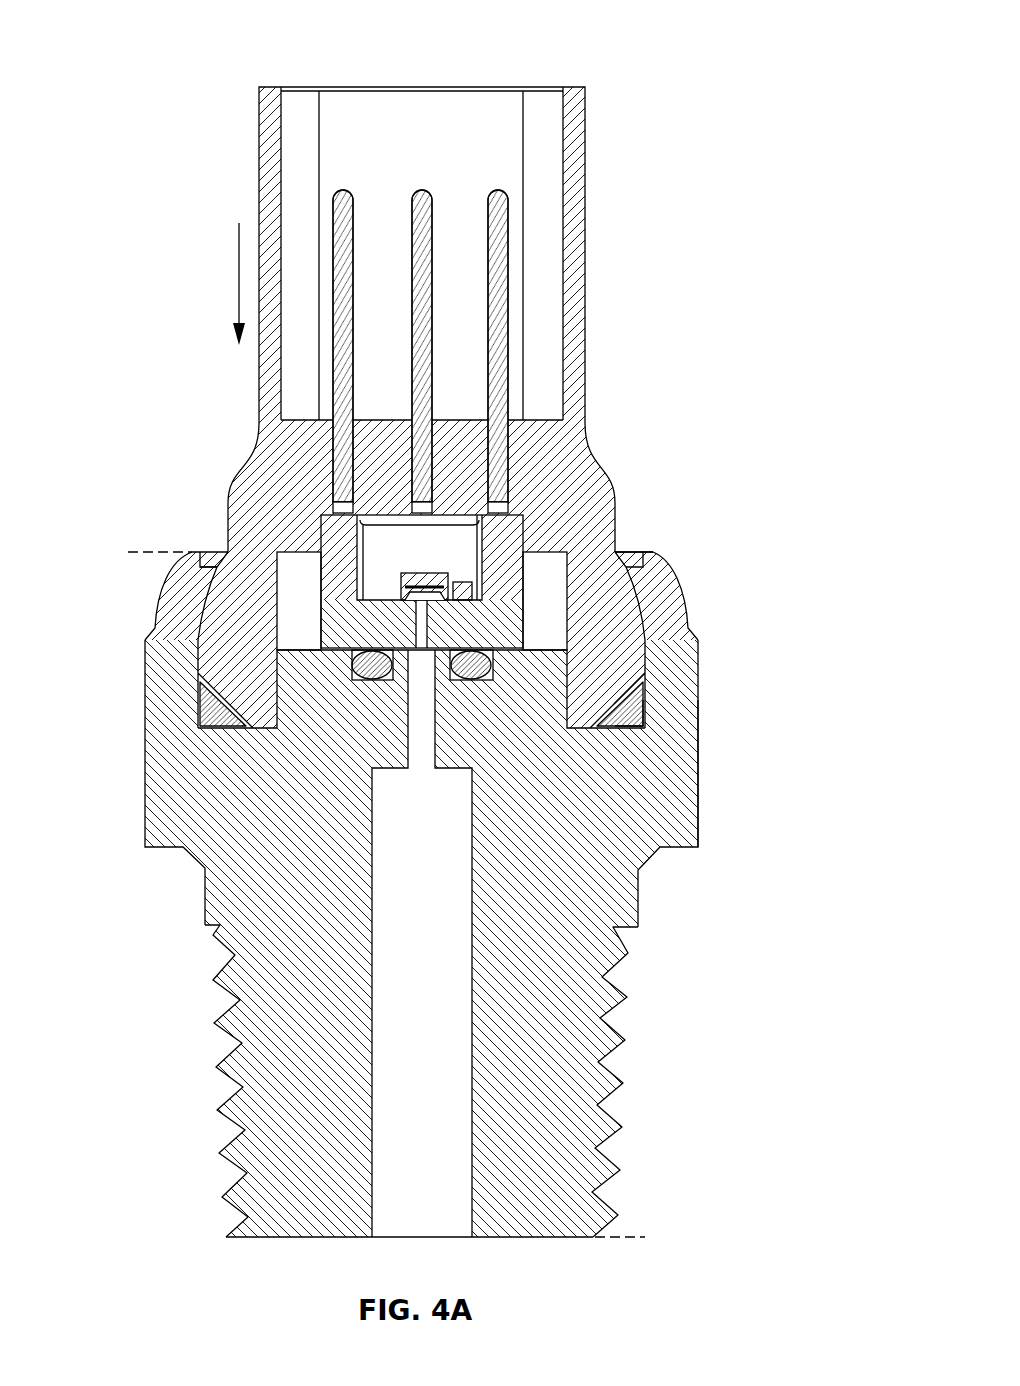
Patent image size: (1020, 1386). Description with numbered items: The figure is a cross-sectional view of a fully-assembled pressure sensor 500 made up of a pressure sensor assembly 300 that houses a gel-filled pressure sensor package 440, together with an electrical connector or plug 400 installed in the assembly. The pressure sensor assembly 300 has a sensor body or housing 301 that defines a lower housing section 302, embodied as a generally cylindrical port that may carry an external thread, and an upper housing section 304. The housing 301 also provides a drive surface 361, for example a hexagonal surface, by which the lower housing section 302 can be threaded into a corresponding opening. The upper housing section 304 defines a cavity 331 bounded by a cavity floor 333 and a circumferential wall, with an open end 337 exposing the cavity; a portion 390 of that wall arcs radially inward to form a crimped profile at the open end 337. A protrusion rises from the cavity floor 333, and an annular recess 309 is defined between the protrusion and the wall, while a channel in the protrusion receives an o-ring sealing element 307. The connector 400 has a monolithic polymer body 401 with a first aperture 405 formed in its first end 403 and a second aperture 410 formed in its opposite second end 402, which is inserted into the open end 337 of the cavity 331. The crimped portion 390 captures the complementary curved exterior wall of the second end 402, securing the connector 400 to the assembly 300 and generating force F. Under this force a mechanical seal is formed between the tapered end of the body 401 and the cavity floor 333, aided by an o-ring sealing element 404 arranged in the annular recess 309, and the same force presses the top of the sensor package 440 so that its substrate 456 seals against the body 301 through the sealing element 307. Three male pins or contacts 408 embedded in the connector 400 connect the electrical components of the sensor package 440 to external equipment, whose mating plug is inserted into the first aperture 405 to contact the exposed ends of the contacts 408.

The pressure sensor assembly 300 is at (448, 872).
The sensor body or housing 301 is at (663, 803).
The lower housing section 302 is at (640, 930).
The upper housing section 304 is at (135, 552).
The sealing element 307 is at (372, 668).
The annular recess 309 is at (613, 683).
The cavity 331 is at (663, 568).
The cavity floor 333 is at (627, 730).
The open end 337 is at (630, 529).
The drive surface 361 is at (698, 775).
The portion of wall 390 is at (200, 570).
The electrical connector or plug 400 is at (448, 621).
The body 401 is at (567, 448).
The second end 402 is at (605, 615).
The first end 403 is at (575, 168).
The sealing element 404 is at (633, 708).
The first aperture 405 is at (444, 156).
The male pins or contacts 408 is at (498, 310).
The second aperture 410 is at (567, 603).
The pressure sensor package 440 is at (445, 541).
The substrate 456 is at (343, 623).
The fully-assembled pressure sensor 500 is at (454, 407).